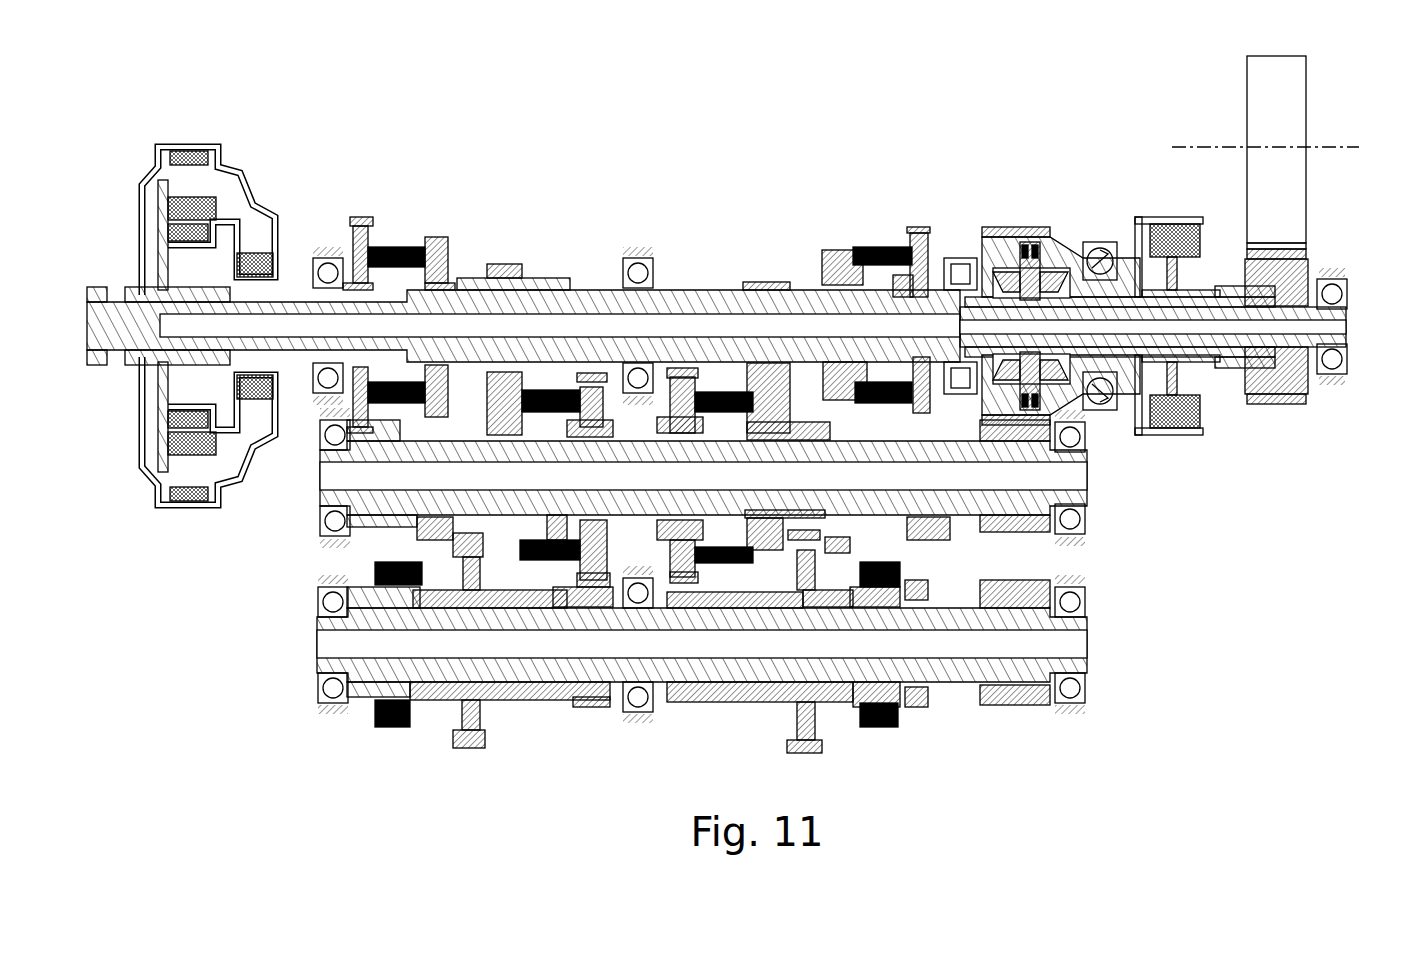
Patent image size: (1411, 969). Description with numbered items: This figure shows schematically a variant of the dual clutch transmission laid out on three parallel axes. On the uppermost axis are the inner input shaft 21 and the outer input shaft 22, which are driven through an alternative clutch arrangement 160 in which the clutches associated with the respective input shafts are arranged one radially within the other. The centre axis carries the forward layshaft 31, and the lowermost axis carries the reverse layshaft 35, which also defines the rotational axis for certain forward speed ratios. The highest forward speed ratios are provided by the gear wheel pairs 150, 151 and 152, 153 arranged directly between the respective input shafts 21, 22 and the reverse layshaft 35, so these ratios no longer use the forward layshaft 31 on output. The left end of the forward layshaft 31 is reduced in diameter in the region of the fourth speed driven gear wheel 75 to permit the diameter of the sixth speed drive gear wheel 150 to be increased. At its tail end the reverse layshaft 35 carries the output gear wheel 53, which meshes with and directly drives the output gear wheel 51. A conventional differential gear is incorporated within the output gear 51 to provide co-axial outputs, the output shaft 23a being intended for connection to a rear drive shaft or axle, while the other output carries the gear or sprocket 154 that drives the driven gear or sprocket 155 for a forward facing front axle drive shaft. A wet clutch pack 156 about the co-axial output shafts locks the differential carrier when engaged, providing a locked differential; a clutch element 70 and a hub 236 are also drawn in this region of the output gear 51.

The clutch arrangement 160 is at (278, 193).
The sixth speed drive gear wheel 150 is at (375, 219).
The outer input shaft 22 is at (545, 283).
The inner input shaft 21 is at (708, 300).
The drive gear wheel 152 is at (918, 228).
The output gear wheel 51 is at (1000, 228).
The separating clutch 70 is at (1048, 282).
The driven gear or sprocket 155 is at (1292, 207).
The output shaft 23a is at (1341, 339).
The rotor hub 236 is at (1222, 350).
The output gear or sprocket 154 is at (1292, 395).
The wet clutch pack 156 is at (1158, 444).
The forward layshaft 31 is at (320, 494).
The fourth speed driven gear wheel 75 is at (420, 532).
The reverse layshaft 35 is at (325, 668).
The driven gear wheel 151 is at (365, 700).
The driven gear wheel 153 is at (920, 708).
The output gear wheel 53 is at (1015, 706).